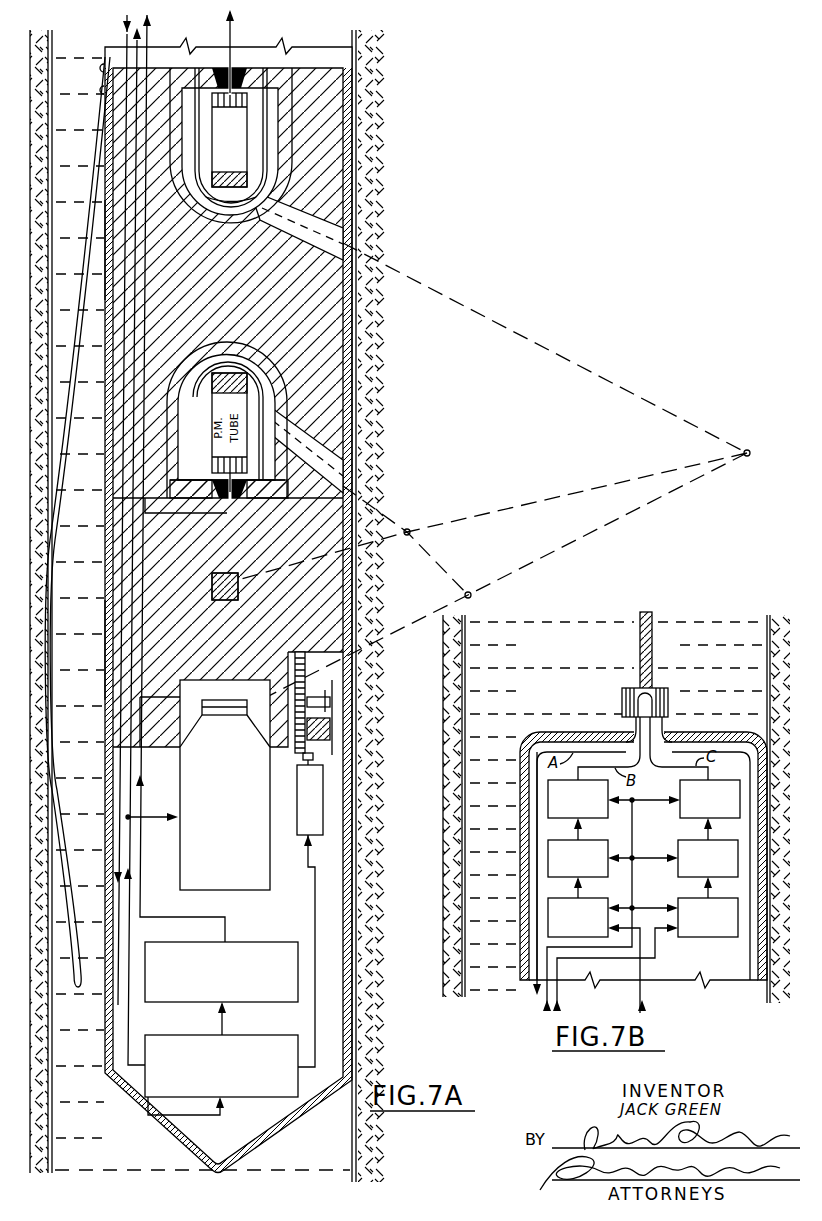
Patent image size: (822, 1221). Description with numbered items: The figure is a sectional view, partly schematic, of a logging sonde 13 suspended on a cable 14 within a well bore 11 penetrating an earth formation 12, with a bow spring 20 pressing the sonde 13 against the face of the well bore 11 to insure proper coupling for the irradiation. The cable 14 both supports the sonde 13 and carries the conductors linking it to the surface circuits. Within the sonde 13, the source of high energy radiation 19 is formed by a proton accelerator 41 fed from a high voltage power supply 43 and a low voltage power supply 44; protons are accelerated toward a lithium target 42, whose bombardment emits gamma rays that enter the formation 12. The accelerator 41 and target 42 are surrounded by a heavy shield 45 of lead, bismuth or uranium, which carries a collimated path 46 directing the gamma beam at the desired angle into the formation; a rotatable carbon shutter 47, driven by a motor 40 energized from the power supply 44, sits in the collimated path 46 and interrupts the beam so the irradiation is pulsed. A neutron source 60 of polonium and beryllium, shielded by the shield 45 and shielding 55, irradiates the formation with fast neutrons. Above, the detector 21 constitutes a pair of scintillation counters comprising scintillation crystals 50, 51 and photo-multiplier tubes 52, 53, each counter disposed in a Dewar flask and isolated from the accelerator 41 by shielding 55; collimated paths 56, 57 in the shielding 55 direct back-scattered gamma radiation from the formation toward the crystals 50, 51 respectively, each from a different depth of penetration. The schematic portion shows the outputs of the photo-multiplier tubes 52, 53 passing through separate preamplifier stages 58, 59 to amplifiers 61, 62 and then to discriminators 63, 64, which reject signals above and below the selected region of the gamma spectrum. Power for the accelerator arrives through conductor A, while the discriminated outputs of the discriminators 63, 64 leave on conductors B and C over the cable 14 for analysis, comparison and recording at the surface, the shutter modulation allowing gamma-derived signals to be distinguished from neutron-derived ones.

In FIG. 7A, the well bore 11 is at (46, 1150).
In FIG. 7B, the well bore 11 is at (463, 668).
In FIG. 7A, the earth formation 12 is at (392, 382).
In FIG. 7B, the earth formation 12 is at (442, 844).
In FIG. 7A, the logging sonde 13 is at (108, 577).
In FIG. 7B, the logging sonde 13 is at (520, 890).
In FIG. 7B, the cable 14 is at (640, 648).
In FIG. 7A, the source of high energy radiation 19 is at (92, 643).
In FIG. 7A, the bow spring 20 is at (66, 797).
In FIG. 7A, the detector 21 is at (98, 253).
In FIG. 7A, the motor 40 is at (323, 800).
In FIG. 7A, the proton accelerator 41 is at (250, 890).
In FIG. 7A, the lithium target 42 is at (227, 697).
In FIG. 7A, the high voltage power supply 43 is at (178, 1003).
In FIG. 7A, the low voltage power supply 44 is at (245, 1097).
In FIG. 7A, the shield 45 is at (178, 573).
In FIG. 7A, the collimated path 46 is at (315, 650).
In FIG. 7A, the rotatable carbon shutter 47 is at (330, 733).
In FIG. 7A, the scintillation crystal 50 is at (217, 193).
In FIG. 7A, the scintillation crystal 51 is at (220, 367).
In FIG. 7A, the photo-multiplier tube 52 is at (243, 127).
In FIG. 7A, the photo-multiplier tube 53 is at (288, 492).
In FIG. 7A, the shielding 55 is at (240, 295).
In FIG. 7A, the collimated path 56 is at (303, 204).
In FIG. 7A, the collimated path 57 is at (312, 427).
In FIG. 7B, the preamplifier stage 58 is at (570, 898).
In FIG. 7B, the preamplifier stage 59 is at (715, 937).
In FIG. 7A, the neutron source 60 is at (222, 602).
In FIG. 7B, the amplifier 61 is at (590, 877).
In FIG. 7B, the amplifier 62 is at (700, 877).
In FIG. 7B, the discriminator 63 is at (590, 818).
In FIG. 7B, the discriminator 64 is at (700, 818).